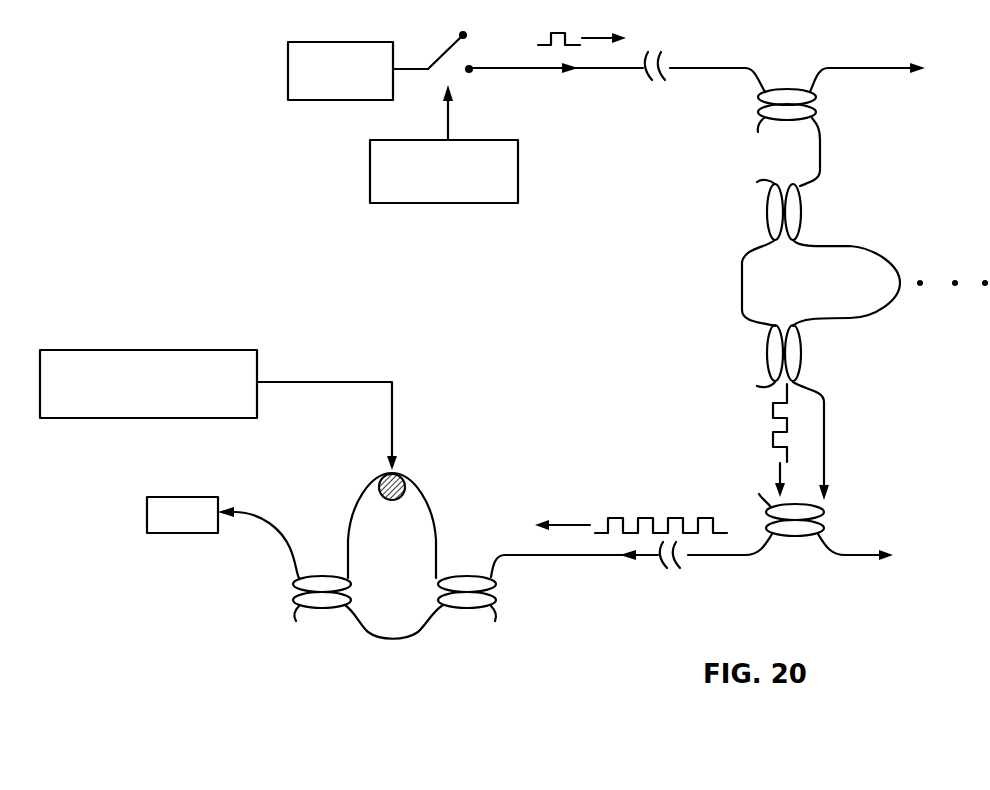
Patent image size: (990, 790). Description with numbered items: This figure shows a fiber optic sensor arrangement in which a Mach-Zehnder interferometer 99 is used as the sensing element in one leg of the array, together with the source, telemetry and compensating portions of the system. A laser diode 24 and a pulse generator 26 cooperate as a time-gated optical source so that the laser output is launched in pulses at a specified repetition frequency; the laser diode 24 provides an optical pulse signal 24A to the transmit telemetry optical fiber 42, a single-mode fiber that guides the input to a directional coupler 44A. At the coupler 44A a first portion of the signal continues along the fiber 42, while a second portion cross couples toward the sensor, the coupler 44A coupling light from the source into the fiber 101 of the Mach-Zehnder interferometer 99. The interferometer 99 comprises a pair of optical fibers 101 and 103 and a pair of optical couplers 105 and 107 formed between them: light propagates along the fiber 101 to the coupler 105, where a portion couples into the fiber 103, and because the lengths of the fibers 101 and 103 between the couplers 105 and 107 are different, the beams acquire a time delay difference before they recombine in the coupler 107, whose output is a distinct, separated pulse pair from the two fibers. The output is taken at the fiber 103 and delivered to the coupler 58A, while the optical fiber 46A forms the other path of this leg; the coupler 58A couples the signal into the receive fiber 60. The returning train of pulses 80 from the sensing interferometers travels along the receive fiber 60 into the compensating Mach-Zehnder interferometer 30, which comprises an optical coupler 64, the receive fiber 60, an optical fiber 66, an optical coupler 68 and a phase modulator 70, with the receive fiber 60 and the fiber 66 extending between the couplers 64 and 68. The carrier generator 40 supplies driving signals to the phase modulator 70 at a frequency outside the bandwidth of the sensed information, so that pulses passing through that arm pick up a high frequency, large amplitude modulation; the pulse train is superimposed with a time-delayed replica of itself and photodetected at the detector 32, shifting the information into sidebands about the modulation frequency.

The laser diode 24 is at (340, 41).
The optical pulse signal 24A is at (562, 33).
The pulse generator 26 is at (518, 153).
The transmit telemetry optical fiber 42 is at (598, 74).
The directional coupler 44A is at (776, 69).
The optical fiber 101 is at (820, 140).
The optical coupler 105 is at (747, 205).
The Mach-Zehnder interferometer 99 is at (720, 281).
The optical fiber 103 is at (870, 250).
The optical coupler 107 is at (835, 360).
The optical fiber 46A is at (825, 443).
The coupler 58A is at (845, 506).
The receive fiber 60 is at (631, 563).
The returning train of pulses 80 is at (660, 487).
The carrier generator 40 is at (257, 357).
The phase modulator 70 is at (410, 456).
The detector 32 is at (175, 533).
The optical coupler 68 is at (306, 628).
The optical coupler 64 is at (470, 627).
The optical fiber 66 is at (393, 641).
The compensating Mach-Zehnder interferometer 30 is at (344, 668).